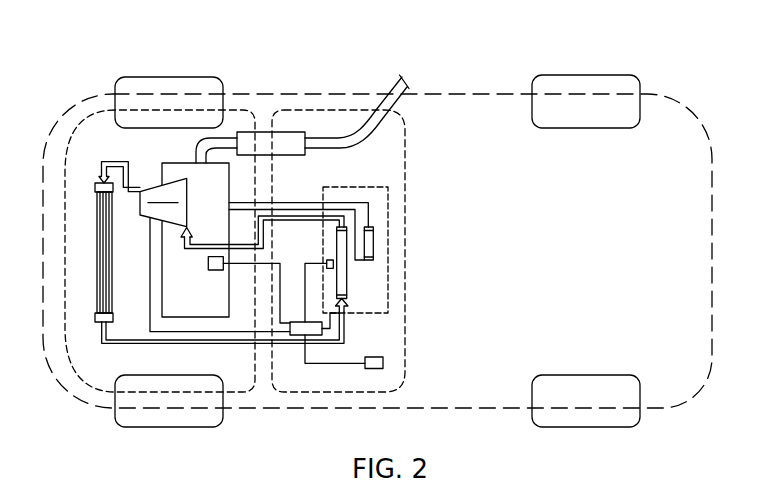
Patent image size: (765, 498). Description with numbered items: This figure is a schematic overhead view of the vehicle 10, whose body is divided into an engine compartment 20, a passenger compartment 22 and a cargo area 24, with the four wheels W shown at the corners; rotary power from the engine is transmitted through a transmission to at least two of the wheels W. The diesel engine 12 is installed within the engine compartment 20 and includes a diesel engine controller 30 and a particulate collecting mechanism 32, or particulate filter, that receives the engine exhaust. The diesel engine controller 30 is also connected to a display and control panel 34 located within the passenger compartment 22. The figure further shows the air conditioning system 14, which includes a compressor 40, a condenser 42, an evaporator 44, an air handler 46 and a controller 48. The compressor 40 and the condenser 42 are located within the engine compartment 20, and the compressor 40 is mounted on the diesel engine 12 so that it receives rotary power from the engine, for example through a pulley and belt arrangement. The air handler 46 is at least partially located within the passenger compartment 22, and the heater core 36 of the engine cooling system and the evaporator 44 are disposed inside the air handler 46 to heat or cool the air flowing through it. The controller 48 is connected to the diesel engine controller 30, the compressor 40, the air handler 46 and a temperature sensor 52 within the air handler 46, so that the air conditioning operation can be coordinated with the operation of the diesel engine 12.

The vehicle 10 is at (377, 250).
The diesel engine 12 is at (179, 162).
The air conditioning system 14 is at (119, 281).
The engine compartment 20 is at (93, 122).
The passenger compartment 22 is at (323, 123).
The cargo area 24 is at (473, 127).
The diesel engine controller 30 is at (215, 271).
The particulate collecting mechanism 32 is at (288, 156).
The display and control panel 34 is at (374, 356).
The heater core 36 is at (374, 243).
The compressor 40 is at (152, 192).
The condenser 42 is at (101, 222).
The evaporator 44 is at (347, 282).
The air handler 46 is at (390, 304).
The controller 48 is at (298, 321).
The sensor 52 is at (329, 258).
The wheels W is at (178, 87).